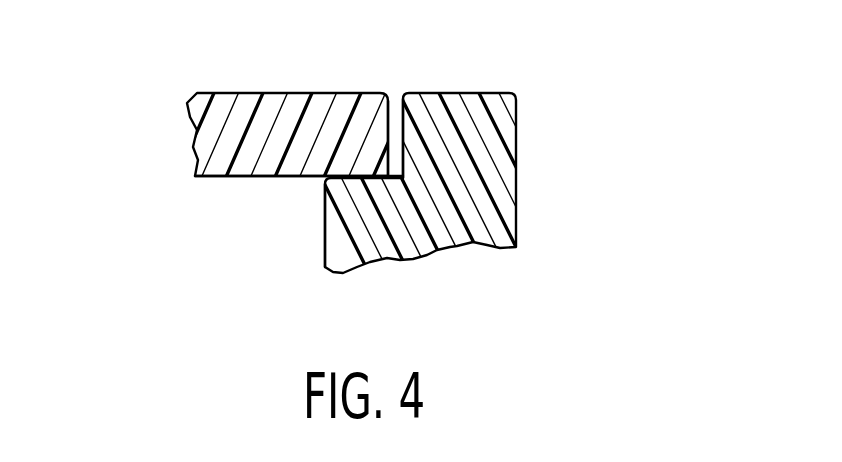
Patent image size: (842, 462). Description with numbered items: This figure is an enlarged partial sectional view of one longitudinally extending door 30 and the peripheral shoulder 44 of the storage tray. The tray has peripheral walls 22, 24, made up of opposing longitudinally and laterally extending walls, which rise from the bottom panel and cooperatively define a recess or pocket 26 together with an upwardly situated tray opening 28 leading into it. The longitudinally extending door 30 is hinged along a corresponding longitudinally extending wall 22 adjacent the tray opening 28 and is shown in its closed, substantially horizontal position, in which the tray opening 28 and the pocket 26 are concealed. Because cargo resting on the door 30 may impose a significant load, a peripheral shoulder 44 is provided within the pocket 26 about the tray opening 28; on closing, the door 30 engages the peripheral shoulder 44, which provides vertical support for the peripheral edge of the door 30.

The longitudinally extending wall 22 is at (480, 175).
The laterally extending wall 24 is at (497, 185).
The pocket 26 is at (247, 206).
The tray opening 28 is at (401, 89).
The longitudinally extending door 30 is at (232, 93).
The peripheral shoulder 44 is at (327, 220).